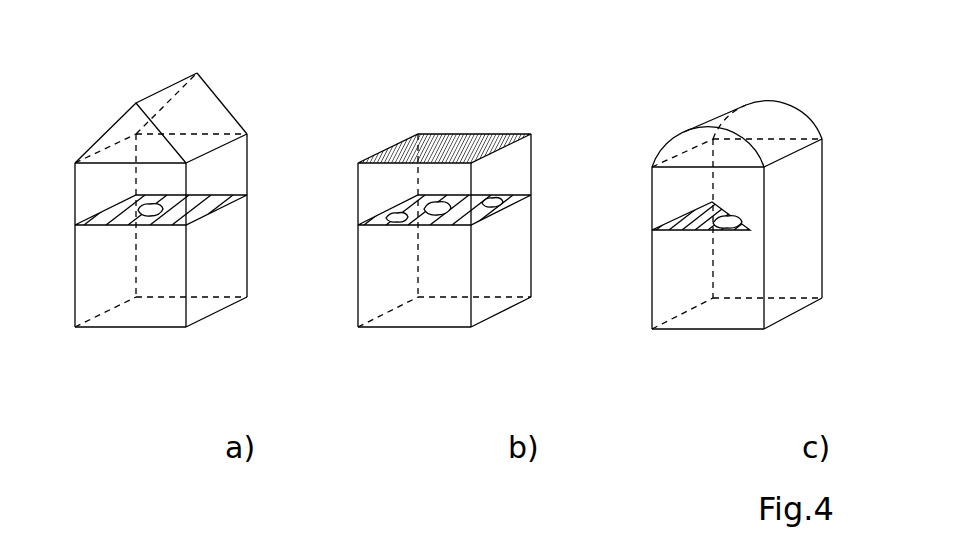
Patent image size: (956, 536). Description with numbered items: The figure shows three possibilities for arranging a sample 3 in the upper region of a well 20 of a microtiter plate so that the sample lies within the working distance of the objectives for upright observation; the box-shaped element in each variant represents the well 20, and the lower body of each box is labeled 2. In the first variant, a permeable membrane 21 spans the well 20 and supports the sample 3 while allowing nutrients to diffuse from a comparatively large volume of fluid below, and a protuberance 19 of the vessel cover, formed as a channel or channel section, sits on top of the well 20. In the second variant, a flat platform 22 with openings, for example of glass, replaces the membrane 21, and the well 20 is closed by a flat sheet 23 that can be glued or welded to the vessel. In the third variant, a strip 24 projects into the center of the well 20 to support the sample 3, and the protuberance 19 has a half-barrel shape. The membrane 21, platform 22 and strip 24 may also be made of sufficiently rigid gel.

The base body 2 is at (113, 293).
The sample 3 is at (150, 205).
The protuberance 19 is at (210, 102).
The well 20 is at (163, 330).
The permeable membrane 21 is at (100, 212).
The platform 22 is at (383, 222).
The sheet 23 is at (478, 138).
The strip 24 is at (678, 217).